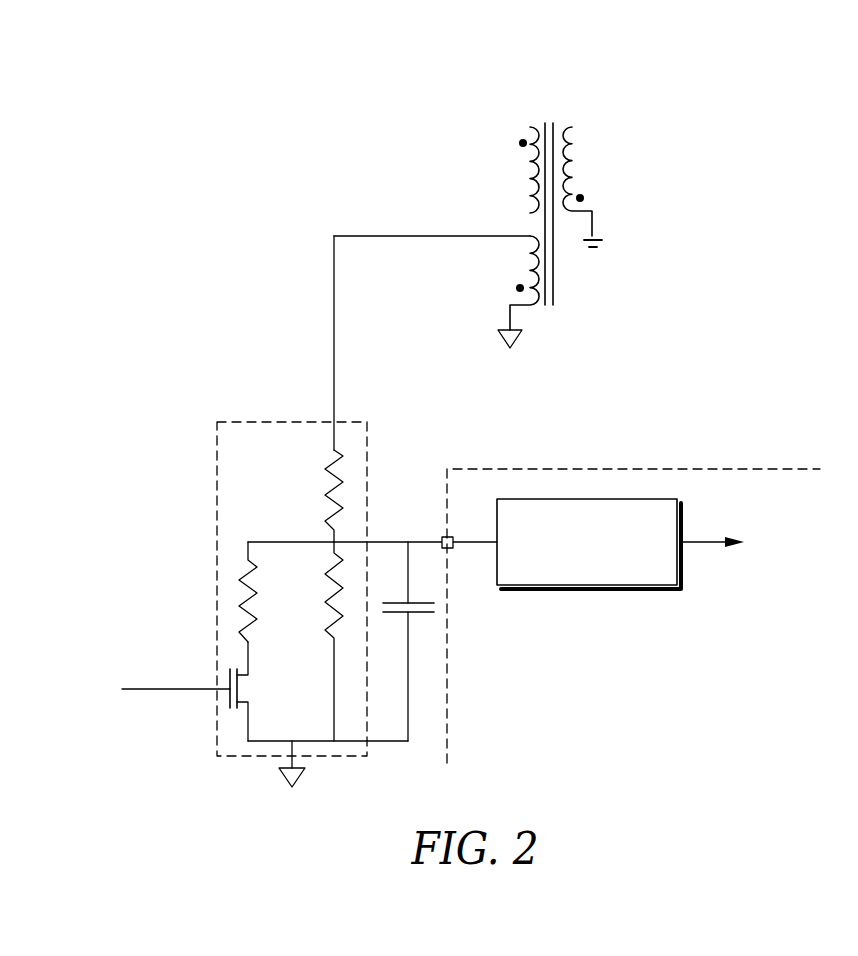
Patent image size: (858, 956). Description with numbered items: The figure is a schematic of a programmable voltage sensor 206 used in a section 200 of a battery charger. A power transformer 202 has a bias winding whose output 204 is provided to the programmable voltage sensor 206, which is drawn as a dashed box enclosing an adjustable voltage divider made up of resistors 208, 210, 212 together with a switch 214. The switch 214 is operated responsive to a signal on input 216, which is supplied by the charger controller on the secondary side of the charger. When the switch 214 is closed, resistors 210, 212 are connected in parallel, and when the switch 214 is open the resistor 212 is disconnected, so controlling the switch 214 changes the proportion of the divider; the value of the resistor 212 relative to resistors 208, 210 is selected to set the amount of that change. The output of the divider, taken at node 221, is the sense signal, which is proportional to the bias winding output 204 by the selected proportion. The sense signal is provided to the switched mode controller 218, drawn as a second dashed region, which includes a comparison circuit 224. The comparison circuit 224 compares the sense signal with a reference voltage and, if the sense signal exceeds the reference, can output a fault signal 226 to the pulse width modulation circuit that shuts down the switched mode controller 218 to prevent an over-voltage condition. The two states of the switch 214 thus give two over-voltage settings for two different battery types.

The section of a battery charger 200 is at (230, 68).
The power transformer 202 is at (554, 121).
The output of bias winding 204 is at (510, 234).
The programmable voltage sensor 206 is at (256, 421).
The resistor 208 is at (326, 465).
The resistor 210 is at (331, 610).
The resistor 212 is at (245, 584).
The switch 214 is at (249, 672).
The input 216 is at (170, 688).
The switched mode controller 218 is at (745, 468).
The sense node 221 is at (441, 540).
The comparison circuit 224 is at (581, 588).
The fault signal 226 is at (703, 543).